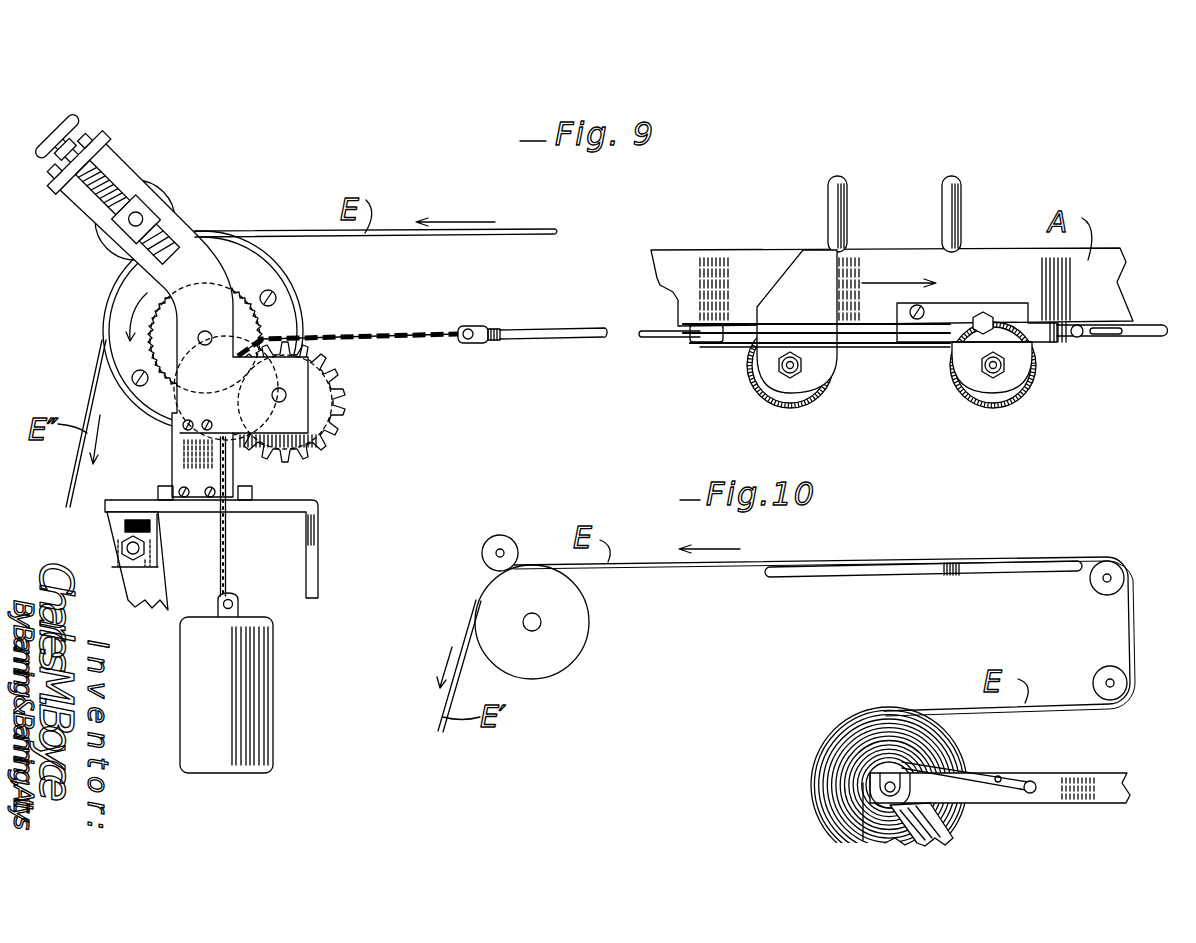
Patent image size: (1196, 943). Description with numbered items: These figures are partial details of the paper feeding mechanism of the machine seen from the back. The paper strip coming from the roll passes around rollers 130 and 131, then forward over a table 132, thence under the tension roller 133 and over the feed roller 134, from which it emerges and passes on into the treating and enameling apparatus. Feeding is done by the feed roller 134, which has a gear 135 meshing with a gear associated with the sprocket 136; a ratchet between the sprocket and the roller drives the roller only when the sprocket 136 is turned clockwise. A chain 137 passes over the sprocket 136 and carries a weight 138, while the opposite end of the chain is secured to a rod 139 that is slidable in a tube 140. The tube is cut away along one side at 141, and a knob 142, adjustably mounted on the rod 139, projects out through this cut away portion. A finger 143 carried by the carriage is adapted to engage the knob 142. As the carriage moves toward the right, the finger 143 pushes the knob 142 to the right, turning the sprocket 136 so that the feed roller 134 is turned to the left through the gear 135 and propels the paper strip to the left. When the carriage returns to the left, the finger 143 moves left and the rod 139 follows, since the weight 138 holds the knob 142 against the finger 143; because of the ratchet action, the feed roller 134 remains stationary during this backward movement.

In FIG. 10, the roller 130 is at (1105, 674).
In FIG. 10, the roller 131 is at (1105, 592).
In FIG. 10, the table 132 is at (938, 572).
In FIG. 9, the tension roller 133 is at (163, 197).
In FIG. 10, the tension roller 133 is at (502, 548).
In FIG. 9, the feed roller 134 is at (258, 273).
In FIG. 10, the feed roller 134 is at (574, 635).
In FIG. 9, the gear 135 is at (247, 322).
In FIG. 9, the sprocket 136 is at (330, 390).
In FIG. 9, the chain 137 is at (430, 340).
In FIG. 9, the weight 138 is at (260, 681).
In FIG. 9, the rod 139 is at (593, 337).
In FIG. 9, the tube 140 is at (1133, 337).
In FIG. 9, the cut away portion 141 is at (888, 345).
In FIG. 9, the knob 142 is at (1077, 338).
In FIG. 9, the finger 143 is at (1063, 343).